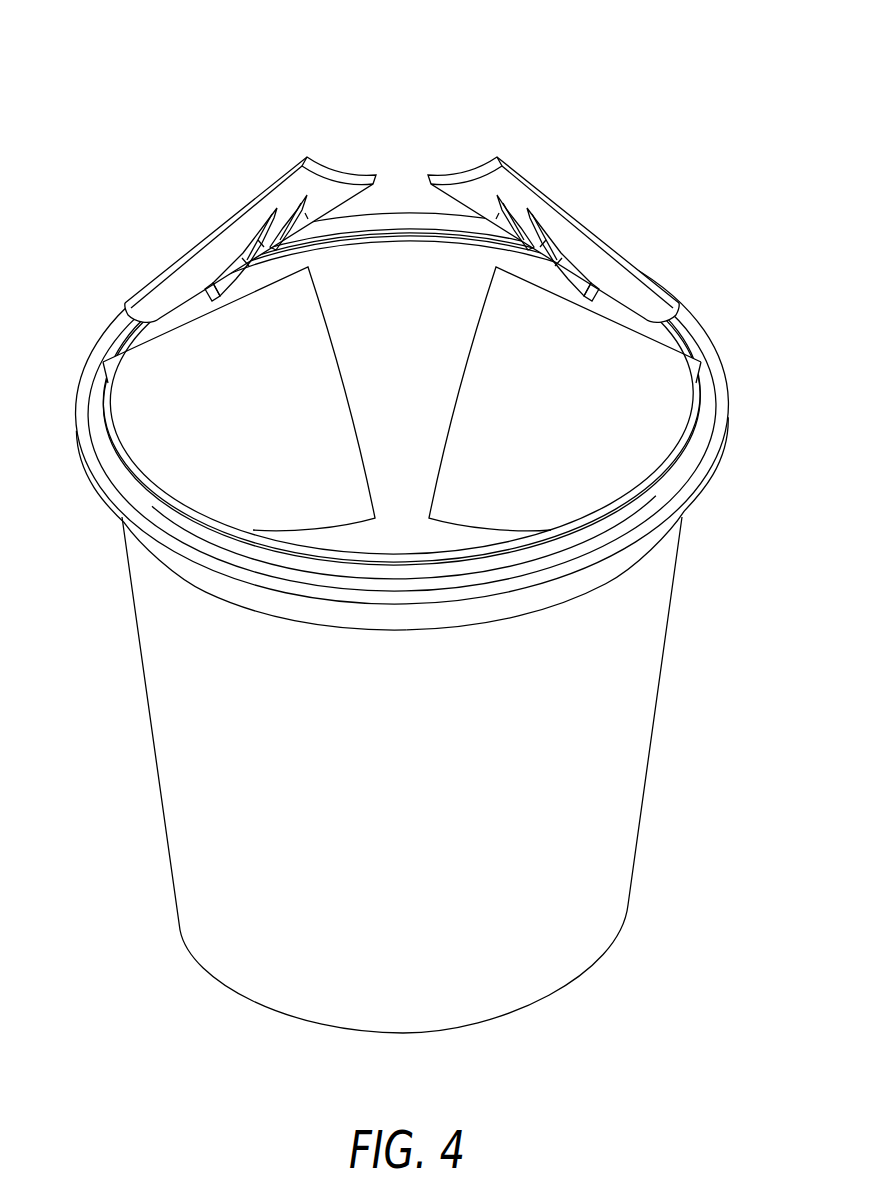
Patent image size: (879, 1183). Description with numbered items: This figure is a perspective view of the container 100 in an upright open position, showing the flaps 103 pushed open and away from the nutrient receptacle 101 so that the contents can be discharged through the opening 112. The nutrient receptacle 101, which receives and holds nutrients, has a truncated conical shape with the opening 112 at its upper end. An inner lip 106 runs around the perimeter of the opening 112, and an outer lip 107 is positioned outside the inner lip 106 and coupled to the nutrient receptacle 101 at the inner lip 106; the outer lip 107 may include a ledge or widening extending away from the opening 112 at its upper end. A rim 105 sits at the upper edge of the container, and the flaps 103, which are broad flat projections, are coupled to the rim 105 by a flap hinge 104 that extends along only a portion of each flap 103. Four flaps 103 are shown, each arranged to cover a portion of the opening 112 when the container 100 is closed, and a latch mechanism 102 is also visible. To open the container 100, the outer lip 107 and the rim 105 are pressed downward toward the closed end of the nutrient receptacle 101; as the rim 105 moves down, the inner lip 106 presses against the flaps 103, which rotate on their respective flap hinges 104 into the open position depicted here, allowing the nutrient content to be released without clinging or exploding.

The container 100 is at (574, 74).
The nutrient receptacle 101 is at (622, 752).
The latch mechanism 102 is at (645, 333).
The flaps 103 is at (465, 167).
The flap hinge 104 is at (608, 452).
The rim 105 is at (710, 403).
The inner lip 106 is at (158, 332).
The outer lip 107 is at (730, 408).
The opening 112 is at (390, 380).